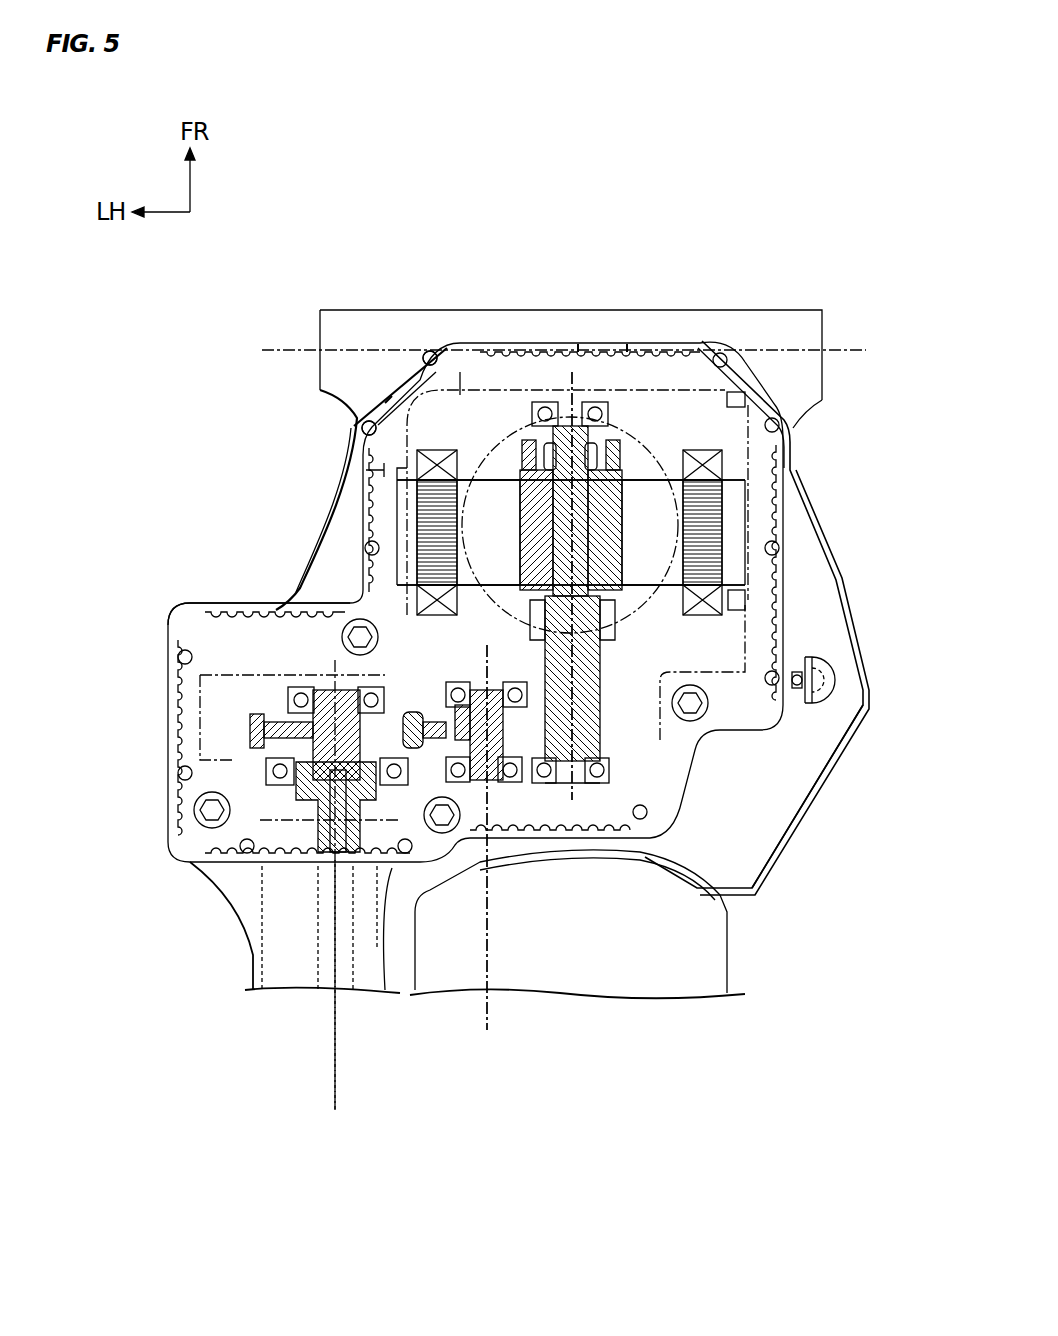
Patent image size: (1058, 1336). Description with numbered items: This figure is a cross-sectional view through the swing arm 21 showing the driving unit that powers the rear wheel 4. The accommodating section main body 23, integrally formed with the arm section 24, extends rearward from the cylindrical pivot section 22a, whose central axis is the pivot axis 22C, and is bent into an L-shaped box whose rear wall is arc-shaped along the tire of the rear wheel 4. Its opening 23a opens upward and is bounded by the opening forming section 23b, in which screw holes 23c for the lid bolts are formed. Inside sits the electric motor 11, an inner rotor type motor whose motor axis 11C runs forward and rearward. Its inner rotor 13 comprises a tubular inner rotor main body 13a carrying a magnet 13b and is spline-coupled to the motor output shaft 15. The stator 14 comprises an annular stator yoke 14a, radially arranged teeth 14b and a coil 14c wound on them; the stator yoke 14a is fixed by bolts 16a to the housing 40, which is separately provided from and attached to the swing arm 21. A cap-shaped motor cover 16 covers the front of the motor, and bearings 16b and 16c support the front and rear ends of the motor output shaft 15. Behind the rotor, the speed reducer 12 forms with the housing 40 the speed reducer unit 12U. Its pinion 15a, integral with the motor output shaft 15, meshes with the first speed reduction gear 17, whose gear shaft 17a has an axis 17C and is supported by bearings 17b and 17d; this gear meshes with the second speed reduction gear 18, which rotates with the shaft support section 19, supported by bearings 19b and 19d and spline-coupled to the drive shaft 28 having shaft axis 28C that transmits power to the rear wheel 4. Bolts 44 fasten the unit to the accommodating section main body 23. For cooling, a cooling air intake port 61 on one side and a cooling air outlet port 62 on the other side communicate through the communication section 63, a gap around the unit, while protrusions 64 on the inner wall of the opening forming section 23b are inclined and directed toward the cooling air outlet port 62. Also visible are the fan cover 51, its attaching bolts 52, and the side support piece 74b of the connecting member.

The rear wheel 4 is at (715, 958).
The electric motor 11 is at (390, 524).
The motor axis 11C is at (572, 370).
The speed reducer 12 is at (240, 727).
The speed reducer unit 12U is at (238, 668).
The inner rotor 13 is at (498, 343).
The inner rotor main body 13a is at (525, 470).
The magnet 13b is at (493, 512).
The stator 14 is at (676, 525).
The stator yoke 14a is at (745, 505).
The teeth 14b is at (700, 538).
The coil 14c is at (740, 605).
The motor output shaft 15 is at (618, 520).
The pinion 15a is at (555, 772).
The motor cover 16 is at (624, 522).
The bolts 16a is at (745, 400).
The bearing 16b is at (612, 425).
The bearing 16c is at (600, 776).
The first speed reduction gear 17 is at (526, 848).
The gear shaft 17a is at (460, 790).
The bearing 17b is at (458, 690).
The axis 17C is at (512, 849).
The bearing 17d is at (510, 785).
The second speed reduction gear 18 is at (262, 716).
The shaft support section 19 is at (237, 701).
The bearing 19b is at (295, 703).
The bearing 19d is at (190, 772).
The swing arm 21 is at (222, 886).
The pivot section 22a is at (770, 312).
The pivot axis 22C is at (845, 348).
The accommodating section main body 23 is at (785, 450).
The opening 23a is at (745, 618).
The opening forming section 23b is at (468, 372).
The screw holes 23c is at (428, 352).
The arm section 24 is at (250, 970).
The drive shaft 28 is at (318, 962).
The shaft axis 28C is at (335, 1060).
The housing 40 is at (734, 672).
The bolts 44 is at (348, 630).
The fan cover 51 is at (775, 882).
The bolts 52 is at (835, 682).
The cooling air intake port 61 is at (542, 400).
The cooling air outlet port 62 is at (640, 633).
The communication section 63 is at (366, 470).
The protrusions 64 is at (385, 402).
The side support piece 74b is at (800, 718).